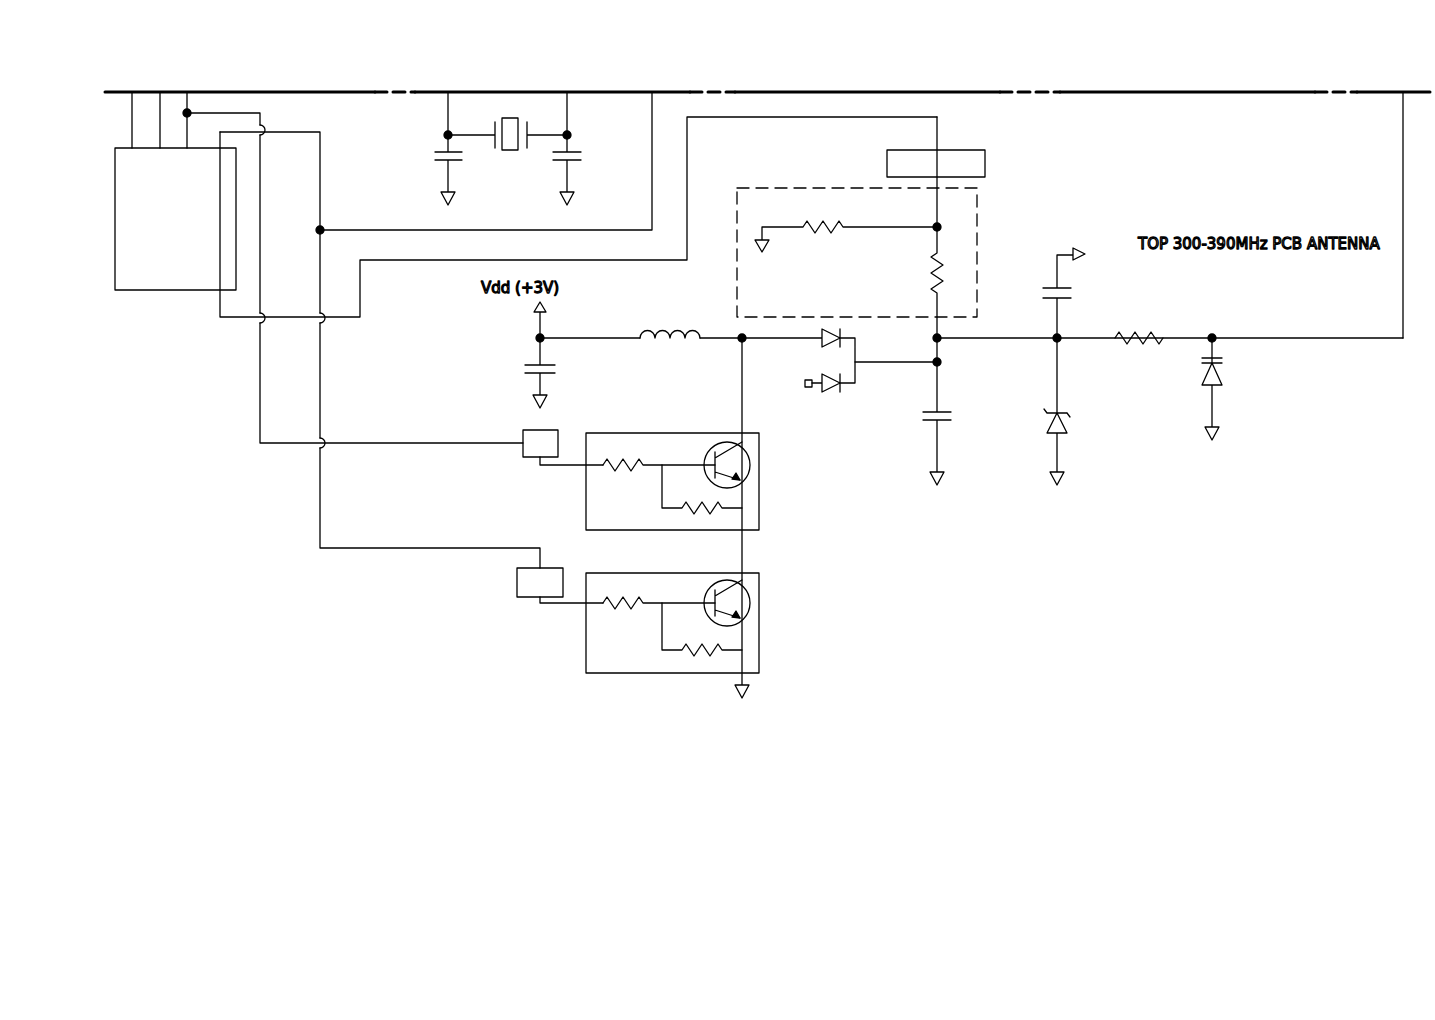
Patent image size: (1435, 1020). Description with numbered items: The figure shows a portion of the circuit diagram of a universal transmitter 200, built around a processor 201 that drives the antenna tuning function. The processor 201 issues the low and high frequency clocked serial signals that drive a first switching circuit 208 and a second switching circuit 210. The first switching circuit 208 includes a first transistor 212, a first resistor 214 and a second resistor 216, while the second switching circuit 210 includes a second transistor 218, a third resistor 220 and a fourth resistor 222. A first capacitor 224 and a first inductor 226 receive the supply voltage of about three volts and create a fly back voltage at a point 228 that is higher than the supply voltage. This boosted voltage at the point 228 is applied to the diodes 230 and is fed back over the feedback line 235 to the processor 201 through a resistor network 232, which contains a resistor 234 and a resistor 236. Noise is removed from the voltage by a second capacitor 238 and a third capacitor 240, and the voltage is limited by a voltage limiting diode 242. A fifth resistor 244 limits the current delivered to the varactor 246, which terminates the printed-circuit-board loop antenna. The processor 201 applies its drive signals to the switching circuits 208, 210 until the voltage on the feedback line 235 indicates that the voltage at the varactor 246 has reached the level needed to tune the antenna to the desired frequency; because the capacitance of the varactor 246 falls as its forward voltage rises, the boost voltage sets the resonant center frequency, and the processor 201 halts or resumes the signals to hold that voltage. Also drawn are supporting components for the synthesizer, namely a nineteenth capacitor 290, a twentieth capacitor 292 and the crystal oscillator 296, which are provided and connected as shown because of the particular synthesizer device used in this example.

The universal transmitter 200 is at (813, 764).
The processor 201 is at (150, 291).
The first switching circuit 208 is at (586, 494).
The second switching circuit 210 is at (586, 634).
The first transistor 212 is at (752, 447).
The first resistor 214 is at (625, 455).
The second resistor 216 is at (708, 522).
The second transistor 218 is at (752, 585).
The third resistor 220 is at (625, 592).
The fourth resistor 222 is at (708, 665).
The first capacitor 224 is at (560, 370).
The first inductor 226 is at (645, 330).
The point 228 is at (747, 343).
The diodes 230 is at (855, 390).
The resistor network 232 is at (760, 188).
The resistor 234 is at (828, 240).
The feedback line 235 is at (937, 135).
The resistor 236 is at (930, 290).
The second capacitor 238 is at (950, 425).
The third capacitor 240 is at (1068, 290).
The voltage limiting diode 242 is at (1062, 440).
The fifth resistor 244 is at (1135, 350).
The varactor 246 is at (1218, 395).
The nineteenth capacitor 290 is at (442, 168).
The twentieth capacitor 292 is at (578, 175).
The oscillator 296 is at (508, 175).